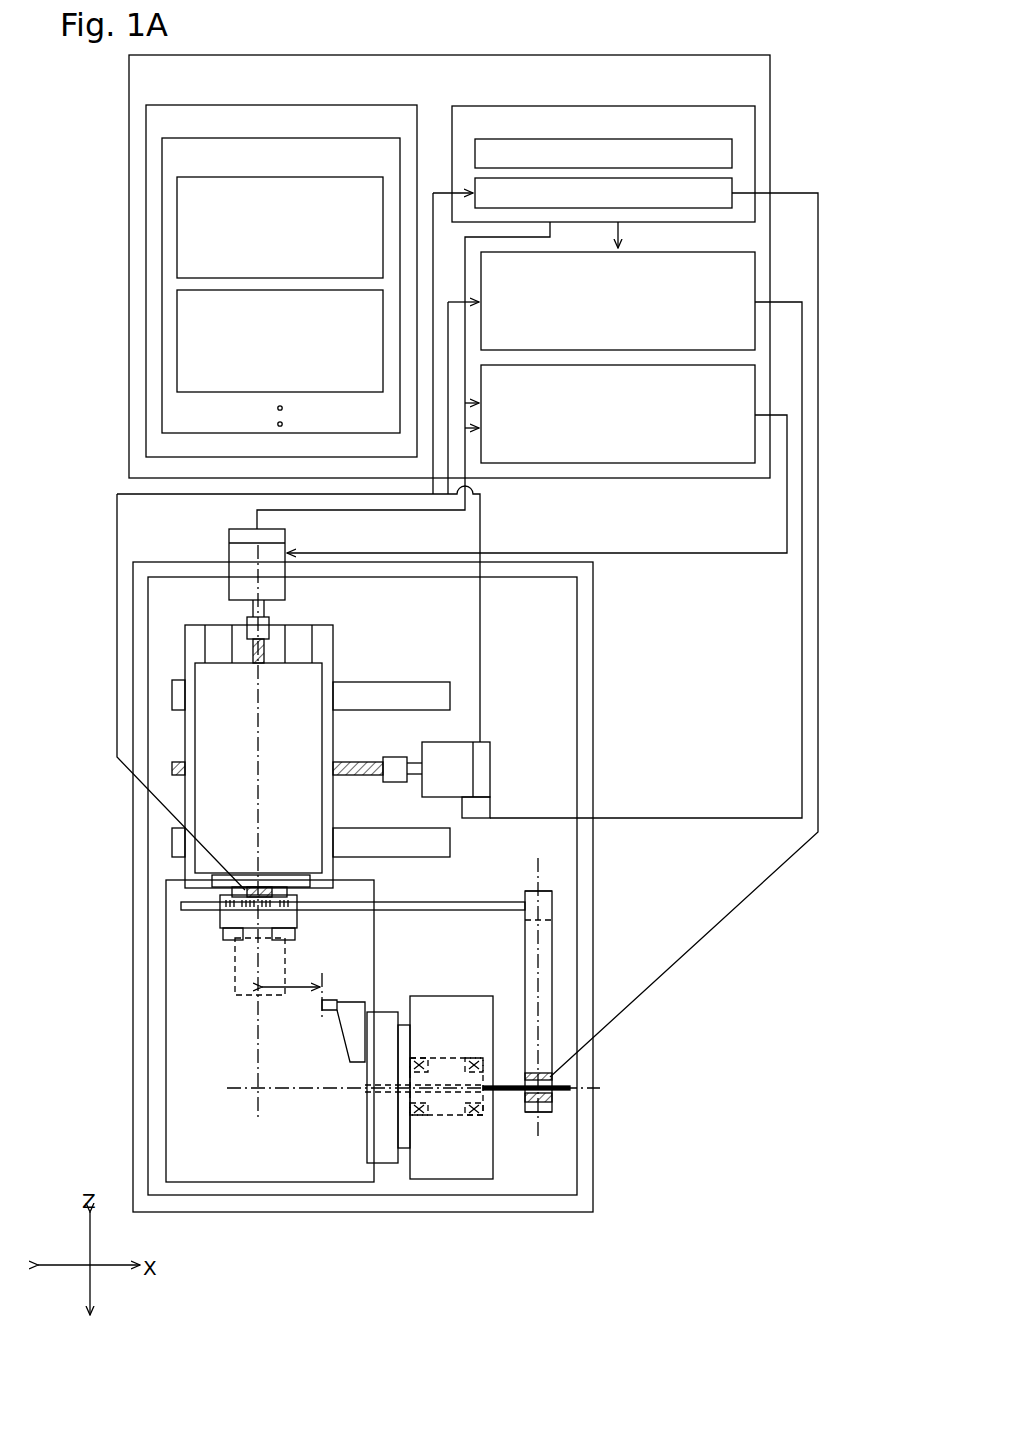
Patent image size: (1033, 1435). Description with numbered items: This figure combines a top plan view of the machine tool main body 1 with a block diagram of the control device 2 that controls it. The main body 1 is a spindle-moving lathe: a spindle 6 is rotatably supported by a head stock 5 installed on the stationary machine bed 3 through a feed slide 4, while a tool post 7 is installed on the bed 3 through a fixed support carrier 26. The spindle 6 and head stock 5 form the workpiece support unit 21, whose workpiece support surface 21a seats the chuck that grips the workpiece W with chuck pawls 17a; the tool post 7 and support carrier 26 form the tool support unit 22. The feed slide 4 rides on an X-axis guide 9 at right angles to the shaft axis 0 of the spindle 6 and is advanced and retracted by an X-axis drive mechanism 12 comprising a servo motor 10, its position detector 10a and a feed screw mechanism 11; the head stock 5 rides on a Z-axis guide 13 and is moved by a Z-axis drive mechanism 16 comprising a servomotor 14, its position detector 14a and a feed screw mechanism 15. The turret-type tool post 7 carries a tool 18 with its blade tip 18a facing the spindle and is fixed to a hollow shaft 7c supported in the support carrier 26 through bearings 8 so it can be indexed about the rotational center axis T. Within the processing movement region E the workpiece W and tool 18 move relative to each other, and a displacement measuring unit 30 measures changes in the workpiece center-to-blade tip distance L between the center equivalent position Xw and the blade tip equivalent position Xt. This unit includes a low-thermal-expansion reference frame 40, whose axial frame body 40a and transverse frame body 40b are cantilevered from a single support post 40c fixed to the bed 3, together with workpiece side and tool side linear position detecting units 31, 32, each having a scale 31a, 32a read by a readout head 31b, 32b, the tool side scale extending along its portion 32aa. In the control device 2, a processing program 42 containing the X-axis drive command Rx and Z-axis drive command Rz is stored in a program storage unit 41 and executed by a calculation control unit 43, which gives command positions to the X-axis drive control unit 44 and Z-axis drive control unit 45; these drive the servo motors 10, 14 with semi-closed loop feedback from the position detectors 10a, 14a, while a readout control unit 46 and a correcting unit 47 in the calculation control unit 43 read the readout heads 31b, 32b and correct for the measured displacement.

The machine tool main body 1 is at (598, 665).
The control device 2 is at (754, 84).
The machine bed 3 is at (548, 632).
The feed slide 4 is at (323, 645).
The head stock 5 is at (215, 703).
The spindle 6 is at (222, 890).
The tool post 7 is at (383, 1140).
The hollow shaft 7c is at (452, 1113).
The bearings 8 is at (425, 1115).
The X-axis guide 9 is at (410, 682).
The servo motor 10 is at (465, 742).
The position detector 10a is at (490, 780).
The feed screw mechanism 11 is at (368, 760).
The X-axis drive mechanism 12 is at (668, 688).
The Z-axis guide 13 is at (297, 632).
The servomotor 14 is at (232, 555).
The position detector 14a is at (240, 530).
The feed screw mechanism 15 is at (250, 648).
The Z-axis drive mechanism 16 is at (62, 530).
The chuck pawls 17a is at (292, 937).
The tool 18 is at (327, 1012).
The tool cutting edge 18a is at (345, 1052).
The workpiece support unit 21 is at (62, 688).
The workpiece support surface 21a is at (228, 933).
The tool support unit 22 is at (430, 1142).
The support carrier 26 is at (428, 1162).
The displacement measuring unit 30 is at (462, 900).
The workpiece side linear position detecting unit 31 is at (62, 812).
The first scale 31a is at (225, 905).
The first readout head 31b is at (245, 888).
The tool side linear position detecting unit 32 is at (714, 1002).
The second scale 32a is at (552, 1075).
The second readout head 32b is at (560, 1103).
The sensor rod 32aa is at (507, 1092).
The reference frame 40 is at (554, 964).
The axial frame body 40a is at (548, 1005).
The transverse frame body 40b is at (505, 895).
The support post 40c is at (560, 930).
The program storage unit 41 is at (150, 118).
The processing program 42 is at (175, 170).
The calculation control unit 43 is at (748, 133).
The X-axis drive control unit 44 is at (755, 282).
The Z-axis drive control unit 45 is at (755, 402).
The readout control unit 46 is at (732, 155).
The correcting unit 47 is at (732, 190).
The shaft axis 0 is at (250, 688).
The X-axis drive command Rx is at (177, 225).
The Z-axis drive command Rz is at (177, 338).
The workpiece W is at (240, 990).
The center equivalent position Xw is at (237, 943).
The processing movement region E is at (230, 1013).
The workpiece center-to-blade tip distance L is at (290, 997).
The rotational center axis T is at (333, 1090).
The blade tip equivalent position Xt is at (358, 1090).